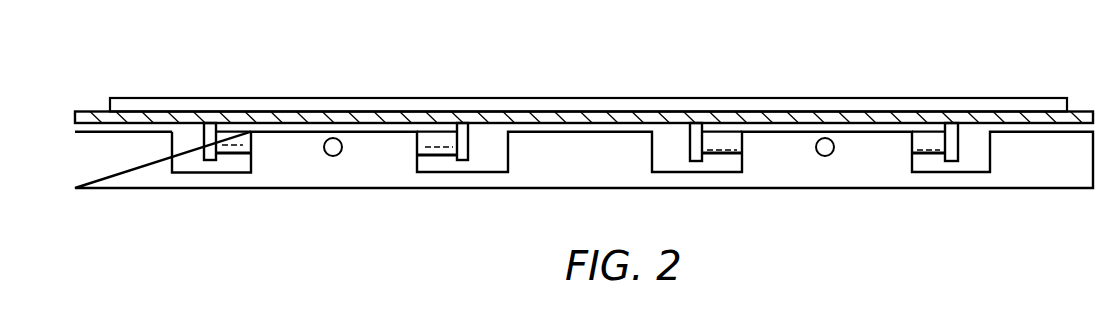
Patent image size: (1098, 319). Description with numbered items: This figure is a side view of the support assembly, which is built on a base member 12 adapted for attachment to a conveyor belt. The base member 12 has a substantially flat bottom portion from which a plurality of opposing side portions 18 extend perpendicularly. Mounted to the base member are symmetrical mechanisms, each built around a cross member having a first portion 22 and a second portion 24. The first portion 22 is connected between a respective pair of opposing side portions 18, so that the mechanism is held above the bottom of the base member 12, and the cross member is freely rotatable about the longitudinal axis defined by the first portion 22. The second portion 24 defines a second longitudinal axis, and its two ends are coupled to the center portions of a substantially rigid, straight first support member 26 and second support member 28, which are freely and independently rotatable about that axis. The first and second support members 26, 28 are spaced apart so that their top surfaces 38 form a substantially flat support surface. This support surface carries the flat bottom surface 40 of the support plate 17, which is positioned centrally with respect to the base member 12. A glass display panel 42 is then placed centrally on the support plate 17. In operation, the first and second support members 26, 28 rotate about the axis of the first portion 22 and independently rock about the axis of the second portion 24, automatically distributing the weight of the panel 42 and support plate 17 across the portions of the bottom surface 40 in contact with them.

The base member 12 is at (628, 173).
The support plate 17 is at (85, 112).
The side portions 18 is at (102, 152).
The first portion 22 is at (332, 153).
The second portion 24 is at (243, 153).
The first support member 26 is at (462, 163).
The second support member 28 is at (210, 160).
The top surfaces 38 is at (213, 125).
The bottom surface 40 is at (190, 125).
The glass display panel 42 is at (147, 98).